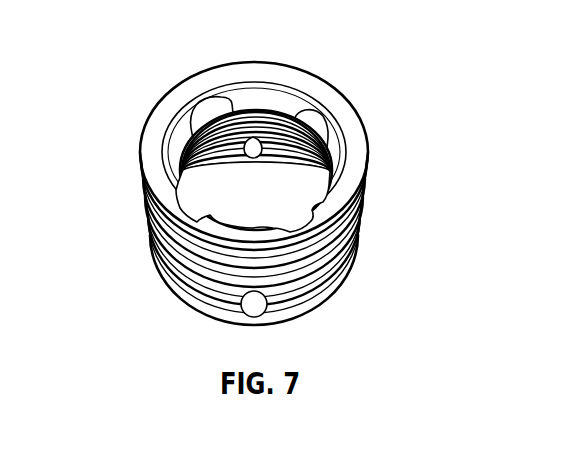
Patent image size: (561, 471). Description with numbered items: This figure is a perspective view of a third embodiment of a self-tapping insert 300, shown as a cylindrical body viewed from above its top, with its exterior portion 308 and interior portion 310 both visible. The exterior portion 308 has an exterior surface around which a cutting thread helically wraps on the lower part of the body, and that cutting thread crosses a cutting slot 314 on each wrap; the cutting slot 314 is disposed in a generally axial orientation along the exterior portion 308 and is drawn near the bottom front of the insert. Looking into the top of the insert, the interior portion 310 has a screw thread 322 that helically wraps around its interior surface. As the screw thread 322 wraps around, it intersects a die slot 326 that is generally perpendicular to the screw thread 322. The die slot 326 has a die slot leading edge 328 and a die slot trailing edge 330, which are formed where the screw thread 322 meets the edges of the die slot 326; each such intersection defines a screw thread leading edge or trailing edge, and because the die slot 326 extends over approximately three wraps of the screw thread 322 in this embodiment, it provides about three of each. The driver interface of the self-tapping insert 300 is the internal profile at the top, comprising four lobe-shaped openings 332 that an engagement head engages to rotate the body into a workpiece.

The self-tapping insert 300 is at (388, 133).
The exterior portion 308 is at (350, 242).
The interior portion 310 is at (282, 125).
The cutting slot 314 is at (276, 308).
The screw thread 322 is at (276, 122).
The die slot 326 is at (180, 108).
The die slot leading edge 328 is at (342, 140).
The die slot trailing edge 330 is at (325, 118).
The lobe-shaped openings 332 is at (212, 100).